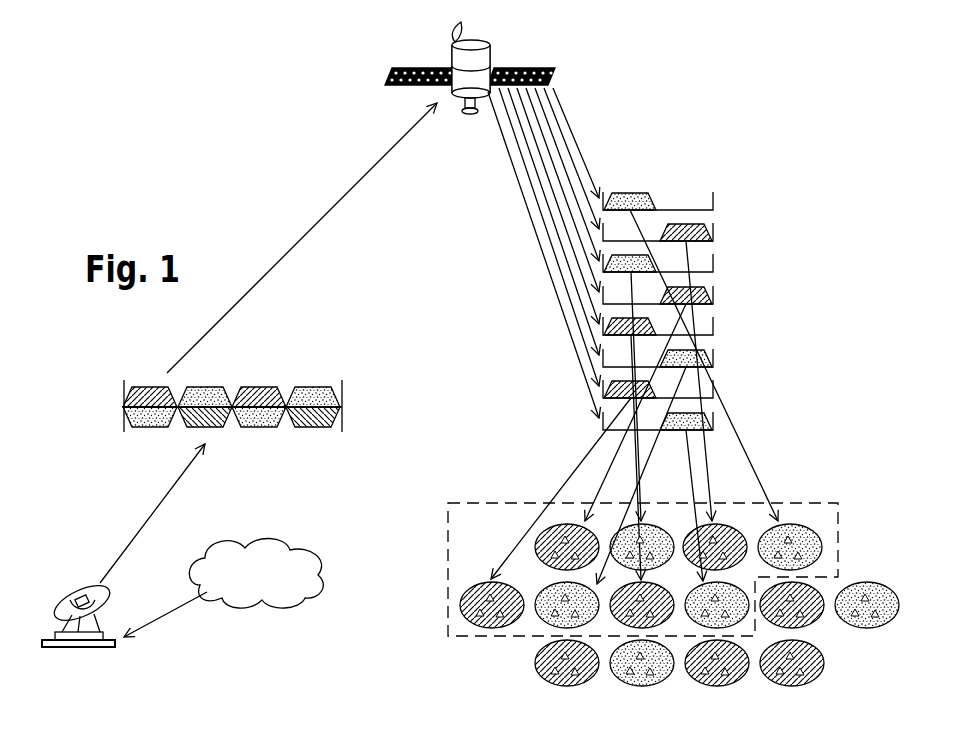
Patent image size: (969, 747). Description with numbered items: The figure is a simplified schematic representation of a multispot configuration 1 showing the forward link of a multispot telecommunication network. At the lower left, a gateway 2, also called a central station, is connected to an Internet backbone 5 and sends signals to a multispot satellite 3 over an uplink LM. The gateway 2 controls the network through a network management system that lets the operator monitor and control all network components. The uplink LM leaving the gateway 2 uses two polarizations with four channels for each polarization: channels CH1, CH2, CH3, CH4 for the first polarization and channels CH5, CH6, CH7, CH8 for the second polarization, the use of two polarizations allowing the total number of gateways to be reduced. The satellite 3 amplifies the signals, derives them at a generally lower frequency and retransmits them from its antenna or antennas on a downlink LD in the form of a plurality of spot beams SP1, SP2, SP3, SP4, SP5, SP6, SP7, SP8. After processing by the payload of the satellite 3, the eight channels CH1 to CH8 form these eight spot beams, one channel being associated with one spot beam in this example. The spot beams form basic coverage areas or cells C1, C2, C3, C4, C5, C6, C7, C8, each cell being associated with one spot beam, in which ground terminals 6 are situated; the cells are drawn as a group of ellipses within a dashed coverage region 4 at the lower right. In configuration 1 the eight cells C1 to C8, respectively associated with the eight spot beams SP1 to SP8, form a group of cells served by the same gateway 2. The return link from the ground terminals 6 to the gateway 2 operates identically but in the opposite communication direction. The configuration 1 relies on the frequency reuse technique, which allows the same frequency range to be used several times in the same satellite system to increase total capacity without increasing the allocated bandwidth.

The configuration 1 is at (200, 212).
The gateway 2 is at (85, 648).
The multispot satellite 3 is at (455, 56).
The coverage area 4 is at (840, 540).
The Internet backbone 5 is at (300, 603).
The ground terminals 6 is at (490, 628).
The uplink LM is at (268, 343).
The downlink LD is at (543, 253).
The channel Ch1 CH1 is at (155, 427).
The channel Ch2 CH2 is at (215, 427).
The channel Ch3 CH3 is at (262, 427).
The channel Ch4 CH4 is at (315, 427).
The channel Ch5 CH5 is at (143, 388).
The channel Ch6 CH6 is at (210, 388).
The channel Ch7 CH7 is at (264, 388).
The channel Ch8 CH8 is at (314, 388).
The spot beam SP1 is at (640, 226).
The spot beam SP2 is at (704, 473).
The spot beam SP3 is at (650, 455).
The spot beam SP4 is at (630, 430).
The spot beam SP5 is at (608, 430).
The spot beam SP6 is at (697, 455).
The spot beam SP7 is at (522, 522).
The spot beam SP8 is at (620, 497).
The cell C1 is at (808, 525).
The cell C2 is at (740, 525).
The cell C3 is at (660, 523).
The cell C4 is at (536, 548).
The cell C5 is at (666, 622).
The cell C6 is at (536, 630).
The cell C7 is at (460, 605).
The cell C8 is at (742, 623).